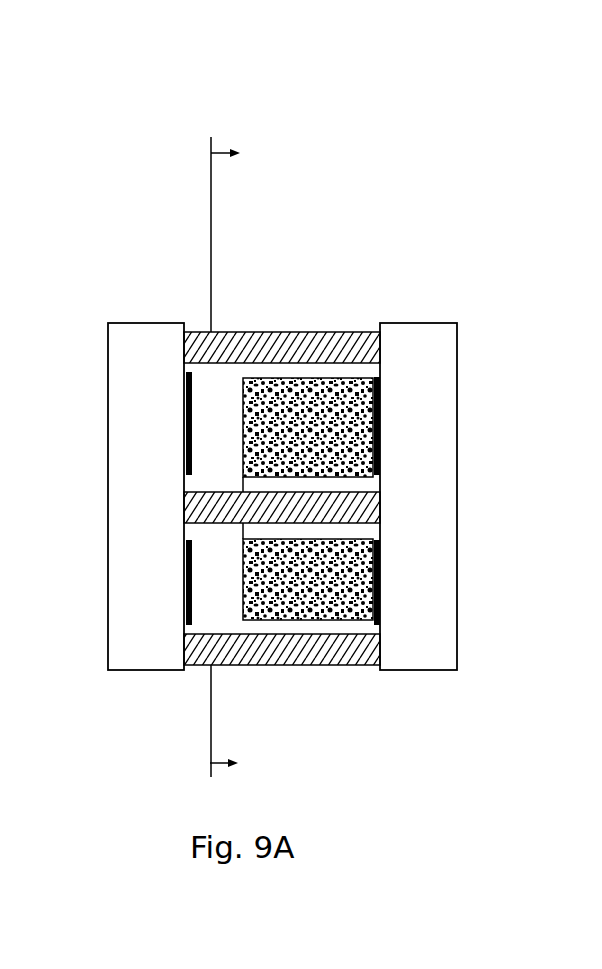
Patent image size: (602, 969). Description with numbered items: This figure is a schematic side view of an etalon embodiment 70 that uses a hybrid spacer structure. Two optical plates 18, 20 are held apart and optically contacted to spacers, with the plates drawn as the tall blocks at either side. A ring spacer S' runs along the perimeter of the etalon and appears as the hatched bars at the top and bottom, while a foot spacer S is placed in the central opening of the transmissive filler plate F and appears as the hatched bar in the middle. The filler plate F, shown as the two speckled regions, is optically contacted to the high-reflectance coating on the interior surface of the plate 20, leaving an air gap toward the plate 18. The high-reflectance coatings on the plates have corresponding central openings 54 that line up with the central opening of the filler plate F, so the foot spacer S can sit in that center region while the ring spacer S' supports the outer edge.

The optical plate 18 is at (158, 342).
The optical plate 20 is at (437, 350).
The central openings 54 is at (197, 481).
The etalon embodiment 70 is at (320, 137).
The foot spacer S is at (361, 491).
The ring spacer S' is at (282, 439).
The transmissive filler plate F is at (350, 410).